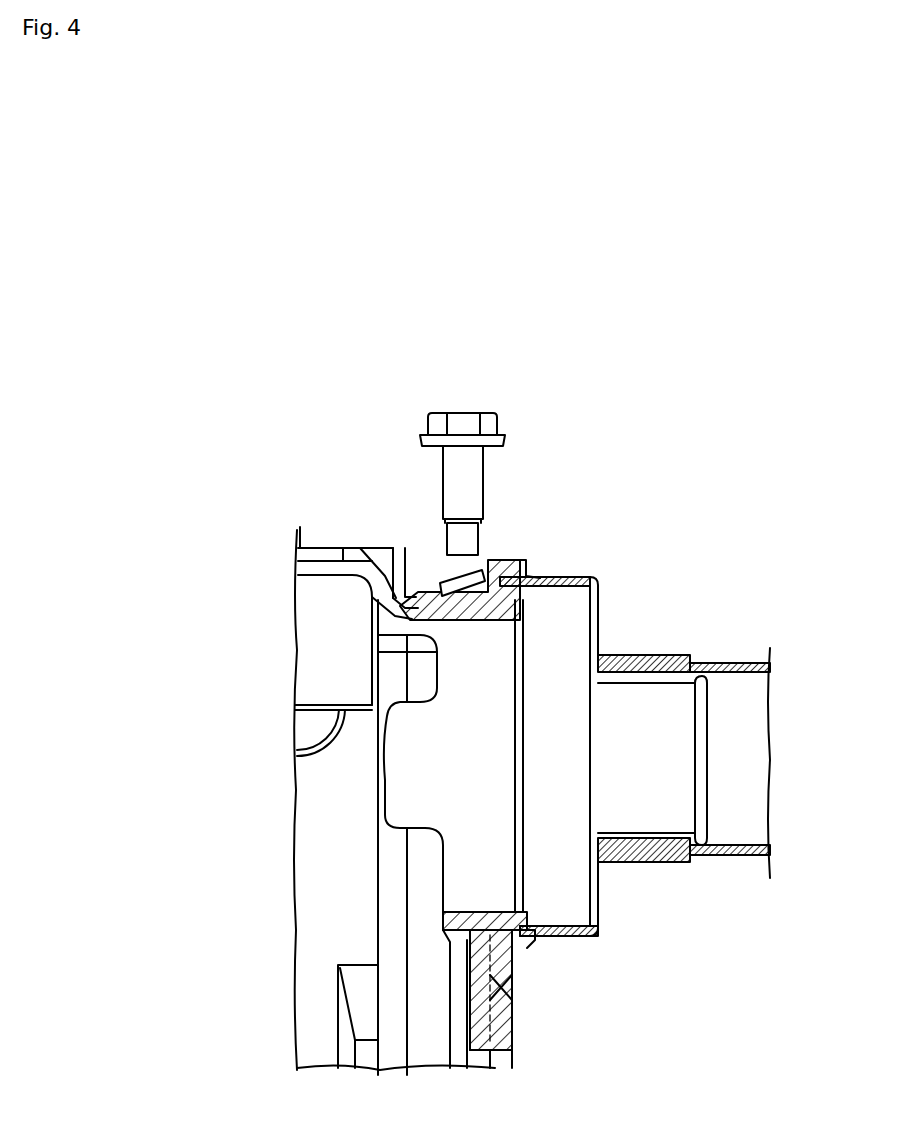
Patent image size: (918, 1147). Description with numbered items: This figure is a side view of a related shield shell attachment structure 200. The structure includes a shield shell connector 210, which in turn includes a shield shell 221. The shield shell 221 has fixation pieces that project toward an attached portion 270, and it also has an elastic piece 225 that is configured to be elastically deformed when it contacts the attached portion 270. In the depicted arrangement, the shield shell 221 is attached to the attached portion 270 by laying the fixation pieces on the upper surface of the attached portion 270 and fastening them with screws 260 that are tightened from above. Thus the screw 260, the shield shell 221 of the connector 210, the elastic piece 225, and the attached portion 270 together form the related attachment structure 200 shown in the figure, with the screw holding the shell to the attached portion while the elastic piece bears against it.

The shield shell attachment structure 200 is at (678, 445).
The shield shell connector 210 is at (688, 522).
The shield shell 221 is at (568, 577).
The elastic piece 225 is at (512, 986).
The screw 260 is at (442, 500).
The attached portion 270 is at (472, 850).